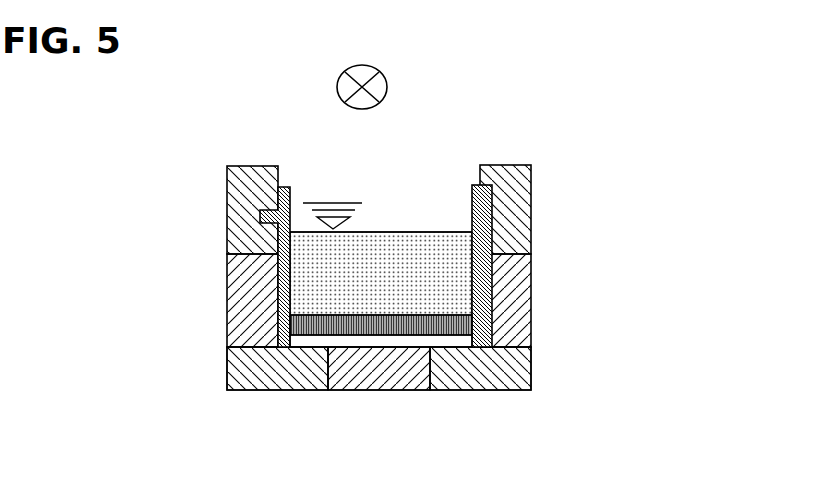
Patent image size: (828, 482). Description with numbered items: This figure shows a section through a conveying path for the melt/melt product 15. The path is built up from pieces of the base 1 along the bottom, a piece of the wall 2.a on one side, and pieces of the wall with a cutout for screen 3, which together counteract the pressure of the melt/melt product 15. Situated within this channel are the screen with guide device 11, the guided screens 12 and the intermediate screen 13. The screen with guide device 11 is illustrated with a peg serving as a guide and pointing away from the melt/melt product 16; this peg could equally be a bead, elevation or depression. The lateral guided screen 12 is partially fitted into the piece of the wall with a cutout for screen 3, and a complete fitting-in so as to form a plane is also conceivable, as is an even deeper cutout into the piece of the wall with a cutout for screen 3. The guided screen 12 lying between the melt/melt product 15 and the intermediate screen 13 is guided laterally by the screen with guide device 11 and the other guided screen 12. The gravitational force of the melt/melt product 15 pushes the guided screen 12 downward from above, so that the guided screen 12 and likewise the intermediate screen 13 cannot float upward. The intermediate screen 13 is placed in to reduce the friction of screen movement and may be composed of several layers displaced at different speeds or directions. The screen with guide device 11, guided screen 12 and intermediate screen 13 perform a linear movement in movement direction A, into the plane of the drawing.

The piece of the base 1 is at (263, 380).
The piece of the wall 2.a is at (243, 300).
The piece of the wall with a cutout for screen 3 is at (240, 213).
The screen with guide device 11 is at (291, 207).
The guided screen 12 is at (470, 203).
The intermediate screen 13 is at (385, 341).
The melt/melt product 15 is at (423, 250).
The melt/melt product 16 is at (381, 230).
The movement direction A is at (377, 87).